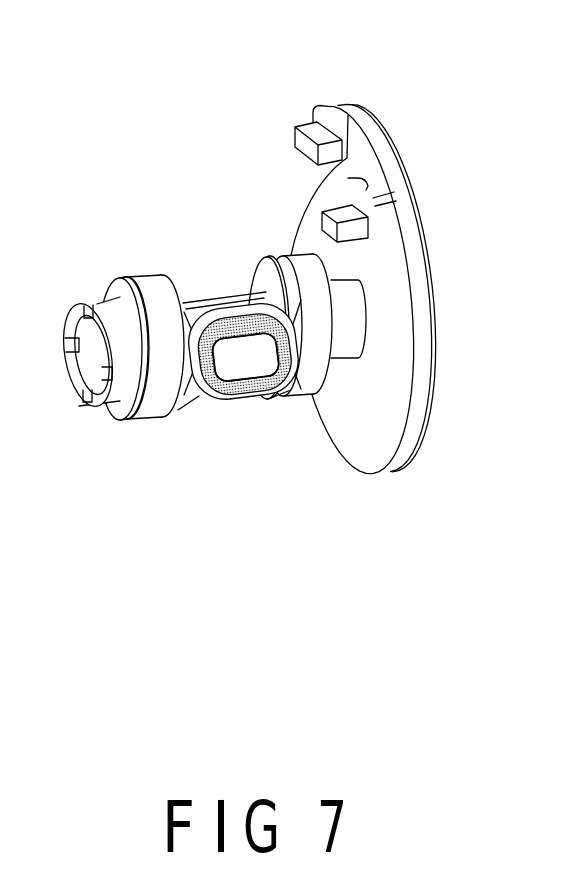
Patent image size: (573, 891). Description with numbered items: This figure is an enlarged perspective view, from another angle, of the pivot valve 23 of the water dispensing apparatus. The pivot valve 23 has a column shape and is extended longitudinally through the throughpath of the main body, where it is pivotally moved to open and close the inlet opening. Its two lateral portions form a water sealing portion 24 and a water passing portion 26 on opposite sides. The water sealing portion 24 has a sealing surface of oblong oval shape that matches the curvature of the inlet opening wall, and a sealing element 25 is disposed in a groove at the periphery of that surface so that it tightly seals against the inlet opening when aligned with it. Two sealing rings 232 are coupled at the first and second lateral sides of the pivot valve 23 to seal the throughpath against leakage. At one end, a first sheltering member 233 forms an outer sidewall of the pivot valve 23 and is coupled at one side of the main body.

The pivot valve 23 is at (130, 473).
The sealing rings 232 is at (142, 288).
The first sheltering member 233 is at (416, 454).
The water sealing portion 24 is at (243, 357).
The sealing element 25 is at (214, 393).
The water passing portion 26 is at (208, 287).